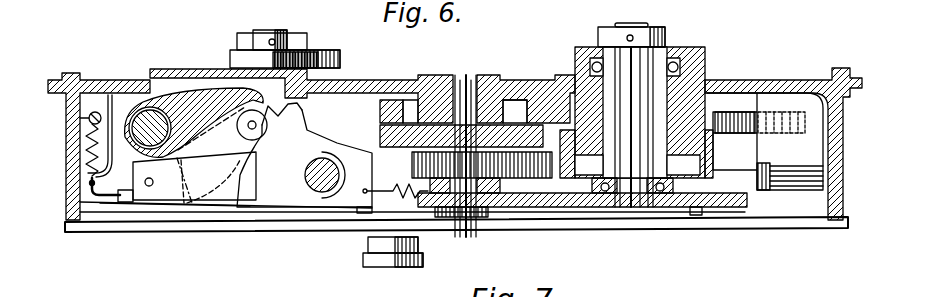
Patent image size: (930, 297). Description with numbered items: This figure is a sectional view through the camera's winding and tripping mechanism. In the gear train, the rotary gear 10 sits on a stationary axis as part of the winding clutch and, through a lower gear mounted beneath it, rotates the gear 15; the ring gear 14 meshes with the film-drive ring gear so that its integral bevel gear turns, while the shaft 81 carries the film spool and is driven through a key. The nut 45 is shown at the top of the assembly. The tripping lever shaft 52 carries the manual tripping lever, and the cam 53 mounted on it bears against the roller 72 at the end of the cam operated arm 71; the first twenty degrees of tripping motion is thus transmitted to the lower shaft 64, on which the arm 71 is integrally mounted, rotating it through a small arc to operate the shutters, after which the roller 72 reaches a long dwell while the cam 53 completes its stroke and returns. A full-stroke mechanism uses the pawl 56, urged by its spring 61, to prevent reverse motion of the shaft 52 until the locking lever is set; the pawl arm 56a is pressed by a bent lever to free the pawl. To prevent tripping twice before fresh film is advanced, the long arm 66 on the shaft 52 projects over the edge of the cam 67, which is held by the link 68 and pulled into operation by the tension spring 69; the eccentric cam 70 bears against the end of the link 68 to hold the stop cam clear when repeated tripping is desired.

The rotary gear 10 is at (508, 132).
The ring gear 14 is at (738, 112).
The gear 15 is at (542, 167).
The adjusting nut 45 is at (285, 34).
The tripping lever shaft 52 is at (327, 186).
The cam 53 is at (295, 110).
The pawl 56 is at (268, 112).
The pawl arm 56a is at (155, 207).
The pawl spring 61 is at (80, 160).
The lower trip shaft 64 is at (138, 118).
The long arm 66 is at (197, 207).
The cam 67 is at (120, 202).
The link 68 is at (92, 210).
The tension spring 69 is at (418, 210).
The eccentric cam 70 is at (368, 208).
The cam operated arm 71 is at (172, 103).
The roller 72 is at (246, 114).
The shaft 81 is at (625, 68).